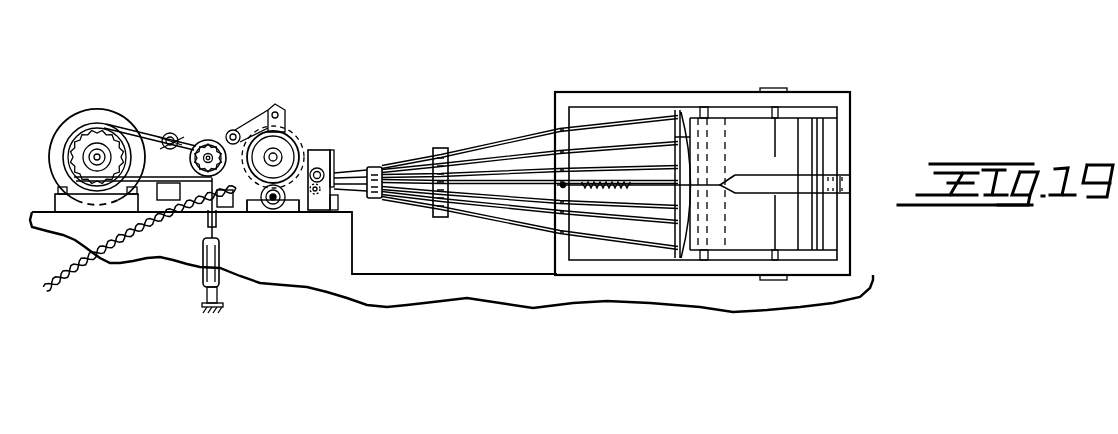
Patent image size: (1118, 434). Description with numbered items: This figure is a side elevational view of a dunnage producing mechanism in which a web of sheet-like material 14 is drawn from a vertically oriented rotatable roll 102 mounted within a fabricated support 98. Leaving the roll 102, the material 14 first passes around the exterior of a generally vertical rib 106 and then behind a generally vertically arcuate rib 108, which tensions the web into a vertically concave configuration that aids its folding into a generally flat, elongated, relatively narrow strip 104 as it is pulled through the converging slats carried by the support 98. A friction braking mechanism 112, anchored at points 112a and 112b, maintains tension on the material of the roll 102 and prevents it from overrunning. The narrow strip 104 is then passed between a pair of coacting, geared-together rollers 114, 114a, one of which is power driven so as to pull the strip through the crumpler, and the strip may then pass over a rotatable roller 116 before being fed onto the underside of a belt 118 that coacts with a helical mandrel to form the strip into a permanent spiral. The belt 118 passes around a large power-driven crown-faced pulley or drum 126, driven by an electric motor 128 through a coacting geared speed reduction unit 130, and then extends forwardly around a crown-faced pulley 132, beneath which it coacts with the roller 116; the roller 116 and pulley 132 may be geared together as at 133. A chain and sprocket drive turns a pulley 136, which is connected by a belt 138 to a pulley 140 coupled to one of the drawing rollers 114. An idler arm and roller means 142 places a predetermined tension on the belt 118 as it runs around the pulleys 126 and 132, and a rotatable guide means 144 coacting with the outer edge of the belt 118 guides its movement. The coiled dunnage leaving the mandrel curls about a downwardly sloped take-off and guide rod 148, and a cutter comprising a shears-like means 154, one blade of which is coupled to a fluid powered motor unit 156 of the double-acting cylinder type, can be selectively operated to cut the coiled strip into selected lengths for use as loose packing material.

The sheet-like material 14 is at (93, 267).
The fabricated support 98 is at (573, 100).
The rotatable roll 102 is at (803, 143).
The strip of material 104 is at (350, 178).
The vertical rib 106 is at (709, 113).
The arcuate rib 108 is at (670, 140).
The friction braking mechanism 112 is at (760, 185).
The anchor of friction braking mechanism 112a is at (848, 190).
The anchor of friction braking mechanism 112b is at (617, 187).
The drawing roller 114 is at (322, 170).
The coacting roller 114a is at (332, 188).
The rotatable roller 116 is at (272, 210).
The belt 118 is at (112, 119).
The crown-faced pulley or drum 126 is at (82, 157).
The electric motor 128 is at (84, 110).
The geared speed reduction unit 130 is at (62, 181).
The crown-faced pulley 132 is at (282, 143).
The gearing 133 is at (288, 195).
The pulley 136 is at (204, 140).
The belt 138 is at (313, 150).
The pulley 140 is at (300, 192).
The idler arm and roller means 142 is at (170, 132).
The rotatable guide means 144 is at (237, 130).
The take-off and guide rod 148 is at (40, 290).
The shears-like means 154 is at (213, 200).
The fluid powered motor unit 156 is at (200, 281).